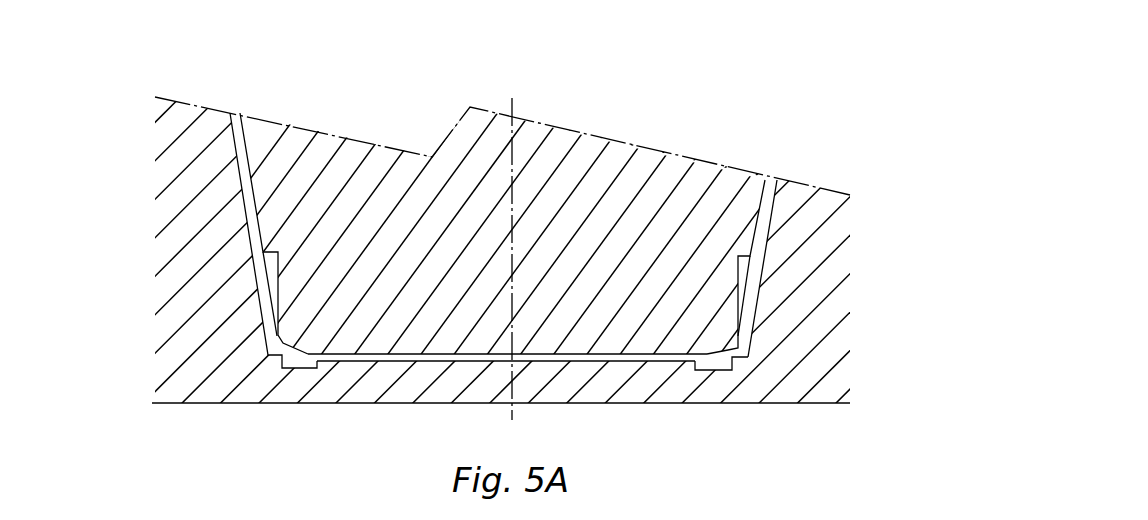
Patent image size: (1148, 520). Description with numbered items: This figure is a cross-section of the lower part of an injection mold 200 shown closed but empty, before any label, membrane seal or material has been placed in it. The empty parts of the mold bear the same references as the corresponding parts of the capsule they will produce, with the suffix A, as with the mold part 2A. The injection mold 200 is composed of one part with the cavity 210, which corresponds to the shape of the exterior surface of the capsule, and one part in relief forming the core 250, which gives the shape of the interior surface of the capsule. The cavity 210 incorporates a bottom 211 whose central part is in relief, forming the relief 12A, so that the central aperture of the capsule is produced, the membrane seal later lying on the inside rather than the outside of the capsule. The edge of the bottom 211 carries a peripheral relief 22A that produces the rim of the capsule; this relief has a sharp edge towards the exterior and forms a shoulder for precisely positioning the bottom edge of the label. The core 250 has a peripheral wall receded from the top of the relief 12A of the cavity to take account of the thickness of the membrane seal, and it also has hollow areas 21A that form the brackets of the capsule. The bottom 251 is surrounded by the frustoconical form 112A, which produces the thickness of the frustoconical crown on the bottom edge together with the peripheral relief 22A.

The injection mold 200 is at (510, 231).
The cavity 210 is at (250, 316).
The bottom 211 is at (421, 365).
The core 250 is at (590, 231).
The bottom 251 is at (635, 352).
The mold part corresponding to the capsule 2A is at (572, 274).
The hollow areas 21A is at (745, 269).
The frustoconical form 112A is at (718, 348).
The relief 12A is at (573, 370).
The peripheral relief 22A is at (737, 363).